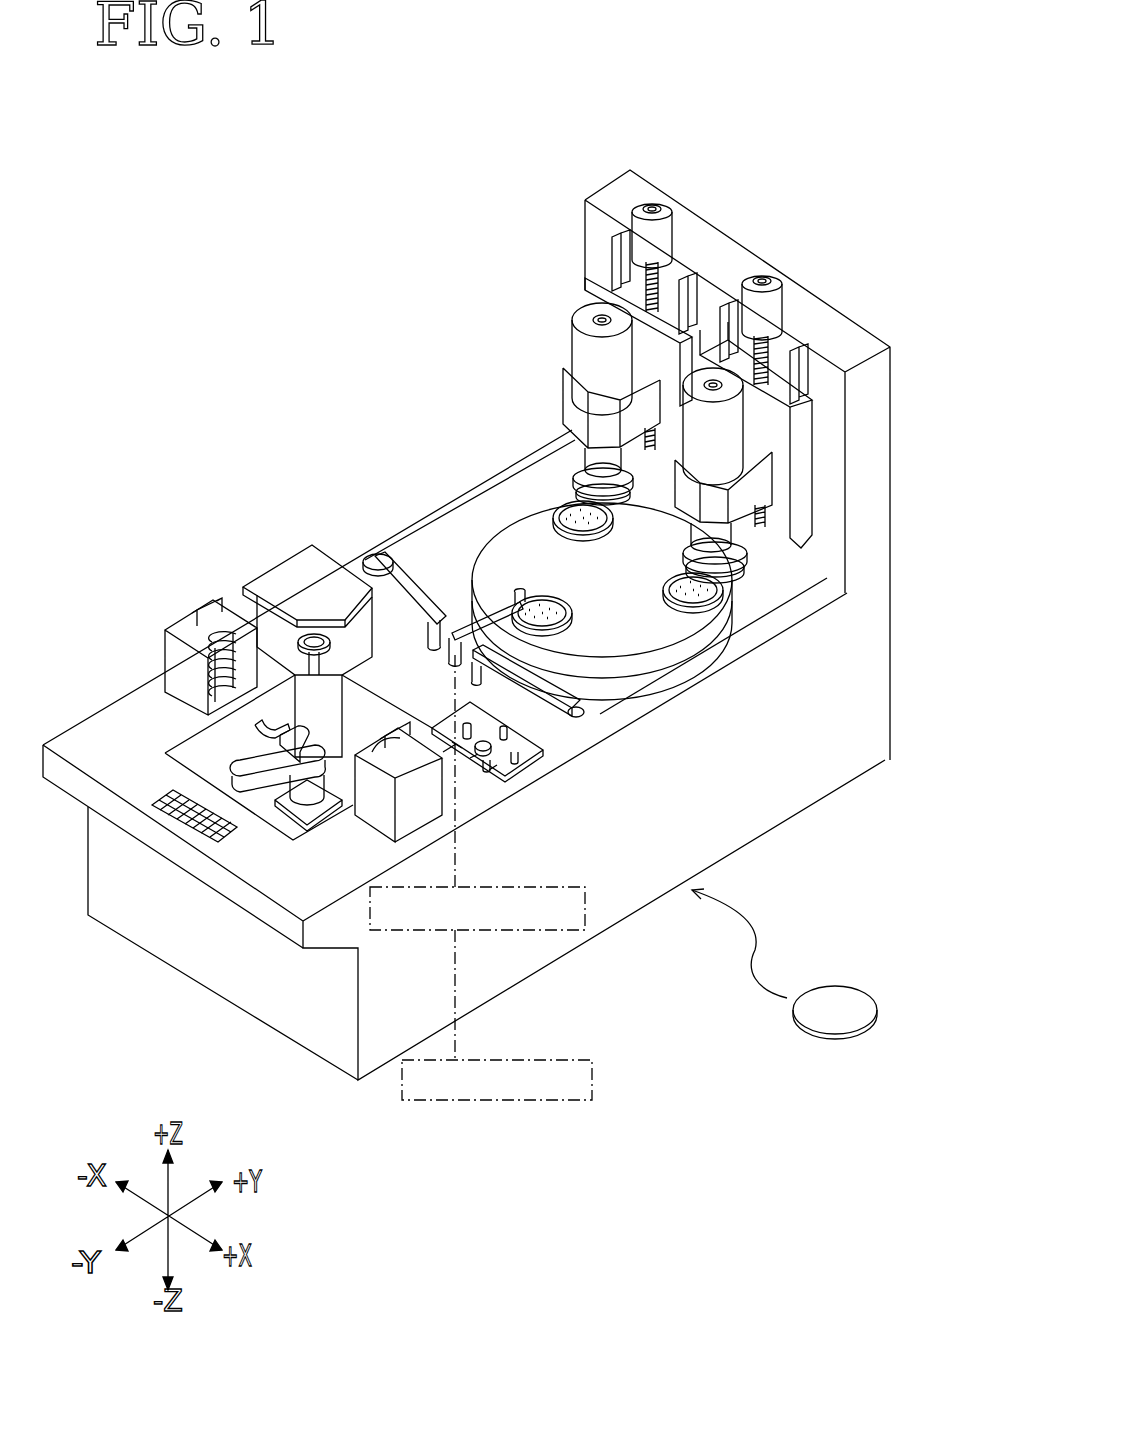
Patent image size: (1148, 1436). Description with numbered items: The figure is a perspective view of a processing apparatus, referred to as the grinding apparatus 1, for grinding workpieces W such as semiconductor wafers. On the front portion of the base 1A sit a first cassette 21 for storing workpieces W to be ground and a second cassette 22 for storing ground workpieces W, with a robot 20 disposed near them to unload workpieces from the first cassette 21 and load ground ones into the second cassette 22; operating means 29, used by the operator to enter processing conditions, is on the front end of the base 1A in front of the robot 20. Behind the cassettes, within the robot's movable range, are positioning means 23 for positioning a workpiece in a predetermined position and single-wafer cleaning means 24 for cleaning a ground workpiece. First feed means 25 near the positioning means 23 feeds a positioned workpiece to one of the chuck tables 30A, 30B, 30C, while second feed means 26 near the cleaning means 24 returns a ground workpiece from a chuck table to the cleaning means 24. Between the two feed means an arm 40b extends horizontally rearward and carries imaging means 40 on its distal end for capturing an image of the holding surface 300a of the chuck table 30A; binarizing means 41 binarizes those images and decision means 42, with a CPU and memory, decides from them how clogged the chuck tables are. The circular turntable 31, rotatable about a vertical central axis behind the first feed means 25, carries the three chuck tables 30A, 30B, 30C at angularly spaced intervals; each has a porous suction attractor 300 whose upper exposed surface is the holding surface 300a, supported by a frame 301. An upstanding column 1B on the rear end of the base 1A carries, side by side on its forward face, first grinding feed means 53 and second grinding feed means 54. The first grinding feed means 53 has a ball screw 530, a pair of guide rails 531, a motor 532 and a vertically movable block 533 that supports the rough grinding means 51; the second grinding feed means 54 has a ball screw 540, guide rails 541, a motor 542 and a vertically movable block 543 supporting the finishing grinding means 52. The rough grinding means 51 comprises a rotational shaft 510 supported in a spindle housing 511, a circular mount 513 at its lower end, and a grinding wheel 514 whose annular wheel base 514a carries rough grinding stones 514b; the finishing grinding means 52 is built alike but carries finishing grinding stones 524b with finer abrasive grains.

The grinding apparatus 1 is at (410, 185).
The base 1A is at (293, 1020).
The column 1B is at (865, 340).
The robot 20 is at (263, 805).
The first cassette 21 is at (367, 805).
The second cassette 22 is at (185, 622).
The positioning means 23 is at (520, 765).
The single-wafer cleaning means 24 is at (290, 597).
The first feed means 25 is at (585, 712).
The second feed means 26 is at (363, 557).
The operating means 29 is at (150, 815).
The chuck table 30A is at (557, 630).
The chuck table 30B is at (680, 608).
The chuck table 30C is at (562, 517).
The suction attractor 300 is at (476, 565).
The holding surface 300a is at (590, 538).
The frame 301 is at (607, 672).
The turntable 31 is at (720, 690).
The imaging means 40 is at (455, 625).
The arm 40b is at (378, 555).
The binarizing means 41 is at (548, 932).
The decision means 42 is at (598, 1085).
The rough grinding means 51 is at (735, 535).
The rotational shaft 510 is at (566, 400).
The spindle housing 511 is at (575, 362).
The mount 513 is at (598, 465).
The grinding wheel 514 is at (753, 560).
The annular wheel base 514a is at (630, 498).
The rough grinding stones 514b is at (720, 580).
The finishing grinding stones 524b is at (618, 508).
The finishing grinding means 52 is at (545, 365).
The first grinding feed means 53 is at (822, 437).
The ball screw 530 is at (880, 380).
The guide rails 531 is at (735, 303).
The motor 532 is at (766, 278).
The vertically movable block 533 is at (805, 462).
The second grinding feed means 54 is at (598, 238).
The ball screw 540 is at (628, 225).
The guide rails 541 is at (614, 240).
The motor 542 is at (655, 204).
The vertically movable block 543 is at (593, 262).
The workpiece W is at (798, 1000).